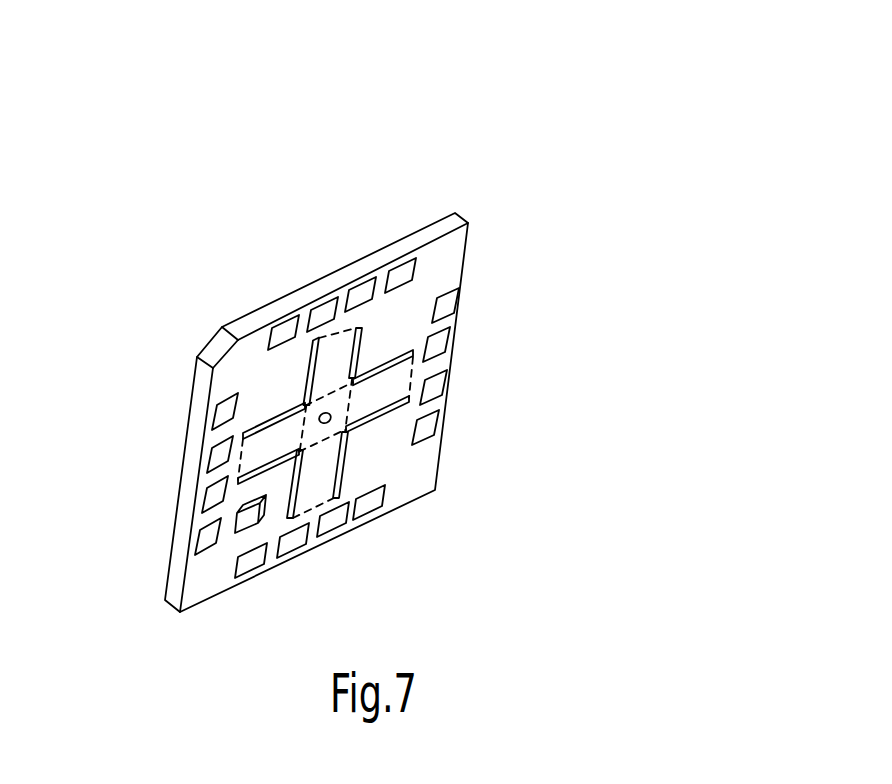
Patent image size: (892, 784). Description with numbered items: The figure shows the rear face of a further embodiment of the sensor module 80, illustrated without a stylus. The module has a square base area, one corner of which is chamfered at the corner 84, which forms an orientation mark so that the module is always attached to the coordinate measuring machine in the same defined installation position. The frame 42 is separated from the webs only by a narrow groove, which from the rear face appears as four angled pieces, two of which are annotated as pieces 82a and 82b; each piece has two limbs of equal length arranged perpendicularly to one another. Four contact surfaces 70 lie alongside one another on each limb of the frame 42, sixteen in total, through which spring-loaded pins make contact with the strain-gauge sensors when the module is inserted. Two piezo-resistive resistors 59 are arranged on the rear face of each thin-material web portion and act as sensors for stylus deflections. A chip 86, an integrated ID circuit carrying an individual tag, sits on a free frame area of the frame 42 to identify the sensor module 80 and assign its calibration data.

The sensor module 80 is at (655, 63).
The frame 42 is at (205, 585).
The chamfered corner 84 is at (210, 347).
The contact surfaces 70 is at (457, 300).
The chip 86 is at (250, 518).
The piezo-resistive resistors 59 is at (327, 333).
The angled groove piece 82b is at (308, 381).
The angled groove piece 82a is at (378, 420).